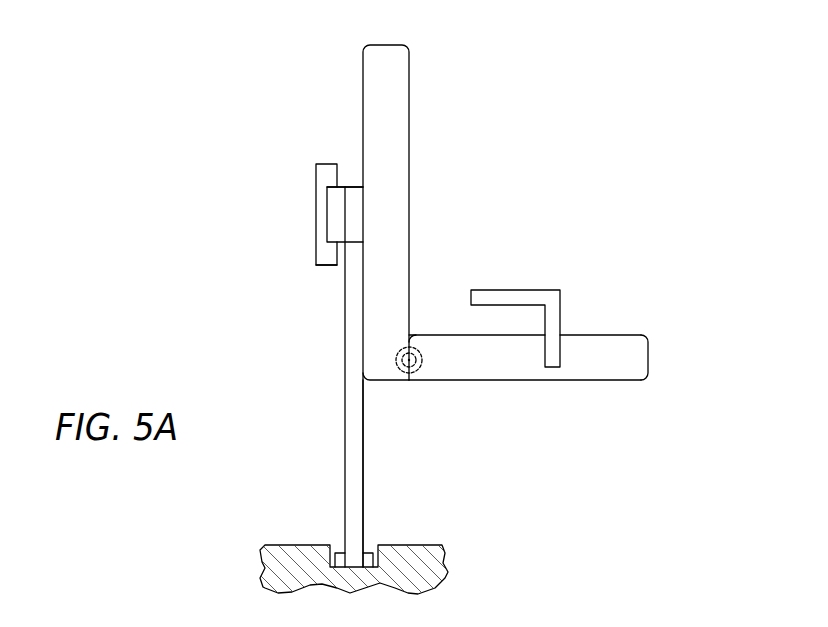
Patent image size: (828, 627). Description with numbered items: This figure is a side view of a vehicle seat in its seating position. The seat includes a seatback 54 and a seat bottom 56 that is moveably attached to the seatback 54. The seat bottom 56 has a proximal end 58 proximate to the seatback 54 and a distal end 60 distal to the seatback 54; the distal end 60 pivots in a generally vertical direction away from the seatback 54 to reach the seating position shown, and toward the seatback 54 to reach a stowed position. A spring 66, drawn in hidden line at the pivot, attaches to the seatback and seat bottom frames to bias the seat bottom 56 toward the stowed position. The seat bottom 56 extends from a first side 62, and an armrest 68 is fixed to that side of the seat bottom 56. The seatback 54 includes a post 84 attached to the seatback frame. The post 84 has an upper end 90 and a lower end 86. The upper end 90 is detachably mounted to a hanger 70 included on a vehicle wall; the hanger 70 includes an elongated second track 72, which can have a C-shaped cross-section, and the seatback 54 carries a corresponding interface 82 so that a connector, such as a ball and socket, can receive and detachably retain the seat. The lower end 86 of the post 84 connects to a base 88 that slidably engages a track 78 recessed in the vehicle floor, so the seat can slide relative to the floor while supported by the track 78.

The seatback 54 is at (394, 45).
The seat bottom 56 is at (605, 332).
The proximal end 58 is at (413, 332).
The distal end 60 is at (650, 349).
The first side 62 is at (610, 362).
The spring 66 is at (422, 367).
The armrest 68 is at (542, 290).
The hanger 70 is at (312, 170).
The second track 72 is at (323, 233).
The track 78 is at (338, 545).
The interface 82 is at (355, 183).
The post 84 is at (325, 378).
The lower end 86 is at (364, 509).
The base 88 is at (370, 544).
The upper end 90 is at (340, 267).